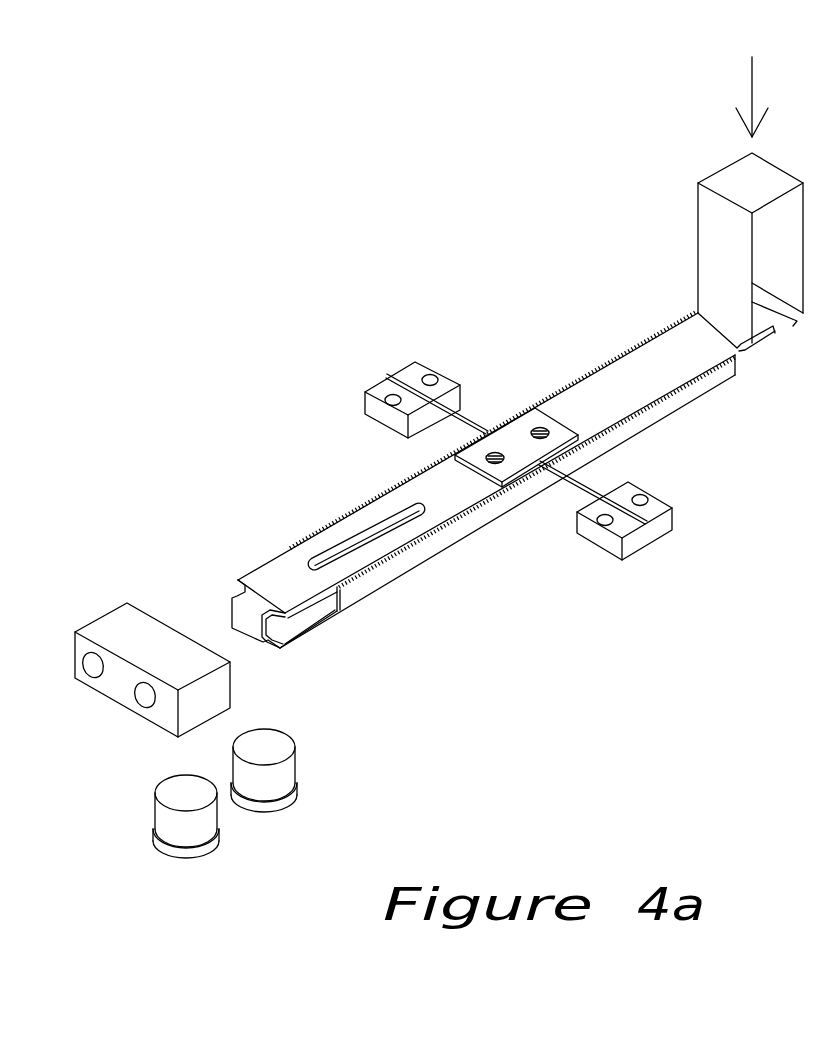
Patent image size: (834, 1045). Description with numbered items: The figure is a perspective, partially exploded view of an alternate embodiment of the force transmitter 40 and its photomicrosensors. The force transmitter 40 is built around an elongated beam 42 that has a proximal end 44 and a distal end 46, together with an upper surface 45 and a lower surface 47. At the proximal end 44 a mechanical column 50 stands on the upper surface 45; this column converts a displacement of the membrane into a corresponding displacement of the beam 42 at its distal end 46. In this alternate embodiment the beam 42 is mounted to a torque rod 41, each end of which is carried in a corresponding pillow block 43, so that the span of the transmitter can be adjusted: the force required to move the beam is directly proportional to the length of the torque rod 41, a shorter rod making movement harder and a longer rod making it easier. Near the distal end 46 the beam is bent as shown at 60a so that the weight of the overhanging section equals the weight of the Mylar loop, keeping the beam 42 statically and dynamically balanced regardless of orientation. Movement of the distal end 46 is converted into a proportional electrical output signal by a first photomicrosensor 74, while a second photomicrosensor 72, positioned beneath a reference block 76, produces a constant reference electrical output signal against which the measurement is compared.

The force transmitter 40 is at (297, 498).
The torque rod 41 is at (475, 412).
The beam 42 is at (527, 440).
The pillow block 43 is at (363, 412).
The proximal end 44 is at (697, 338).
The upper surface 45 is at (635, 385).
The distal end 46 is at (268, 580).
The lower surface 47 is at (328, 592).
The mechanical column 50 is at (722, 243).
The bent end of beam 60a is at (307, 638).
The second photomicrosensor 72 is at (298, 785).
The first photomicrosensor 74 is at (152, 846).
The reference block 76 is at (152, 670).